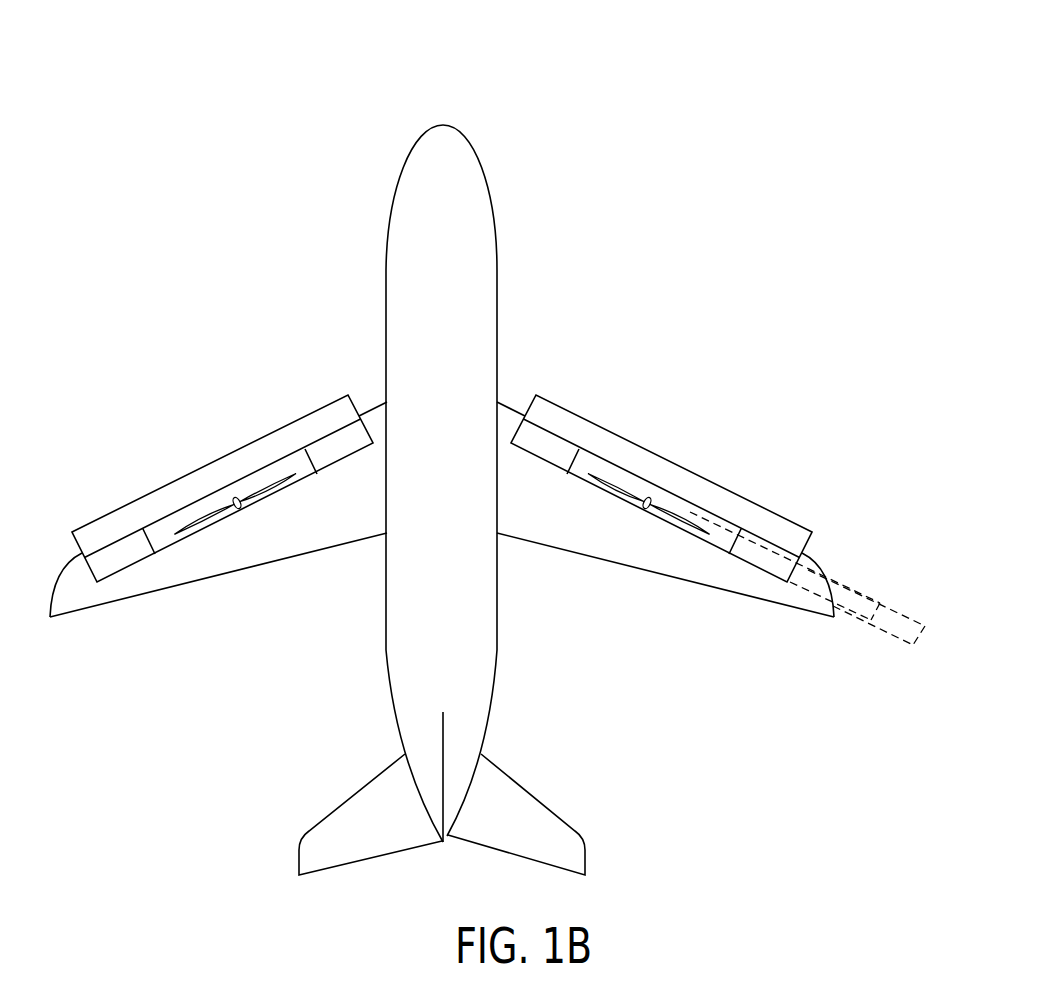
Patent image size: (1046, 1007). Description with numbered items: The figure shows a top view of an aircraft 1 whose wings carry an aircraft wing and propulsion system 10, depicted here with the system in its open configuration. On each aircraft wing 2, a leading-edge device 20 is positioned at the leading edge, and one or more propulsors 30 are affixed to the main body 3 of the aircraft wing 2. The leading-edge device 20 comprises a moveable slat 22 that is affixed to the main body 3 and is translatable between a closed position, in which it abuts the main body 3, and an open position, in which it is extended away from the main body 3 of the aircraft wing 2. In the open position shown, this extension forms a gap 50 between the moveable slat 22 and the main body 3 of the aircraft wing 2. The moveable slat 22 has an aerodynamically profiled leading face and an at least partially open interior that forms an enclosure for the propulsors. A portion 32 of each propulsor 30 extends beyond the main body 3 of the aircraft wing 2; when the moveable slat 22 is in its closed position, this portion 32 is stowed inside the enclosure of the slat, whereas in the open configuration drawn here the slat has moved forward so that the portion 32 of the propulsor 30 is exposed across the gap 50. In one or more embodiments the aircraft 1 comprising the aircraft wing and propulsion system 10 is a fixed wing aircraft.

The aircraft 1 is at (440, 76).
The aircraft wing 2 is at (166, 620).
The main body of the aircraft wing 3 is at (313, 538).
The aircraft wing and propulsion system 10 is at (243, 412).
The leading-edge device 20 is at (105, 527).
The moveable slat 22 is at (327, 418).
The propulsor 30 is at (235, 497).
The portion of the propulsor 32 is at (798, 578).
The gap 50 is at (879, 617).